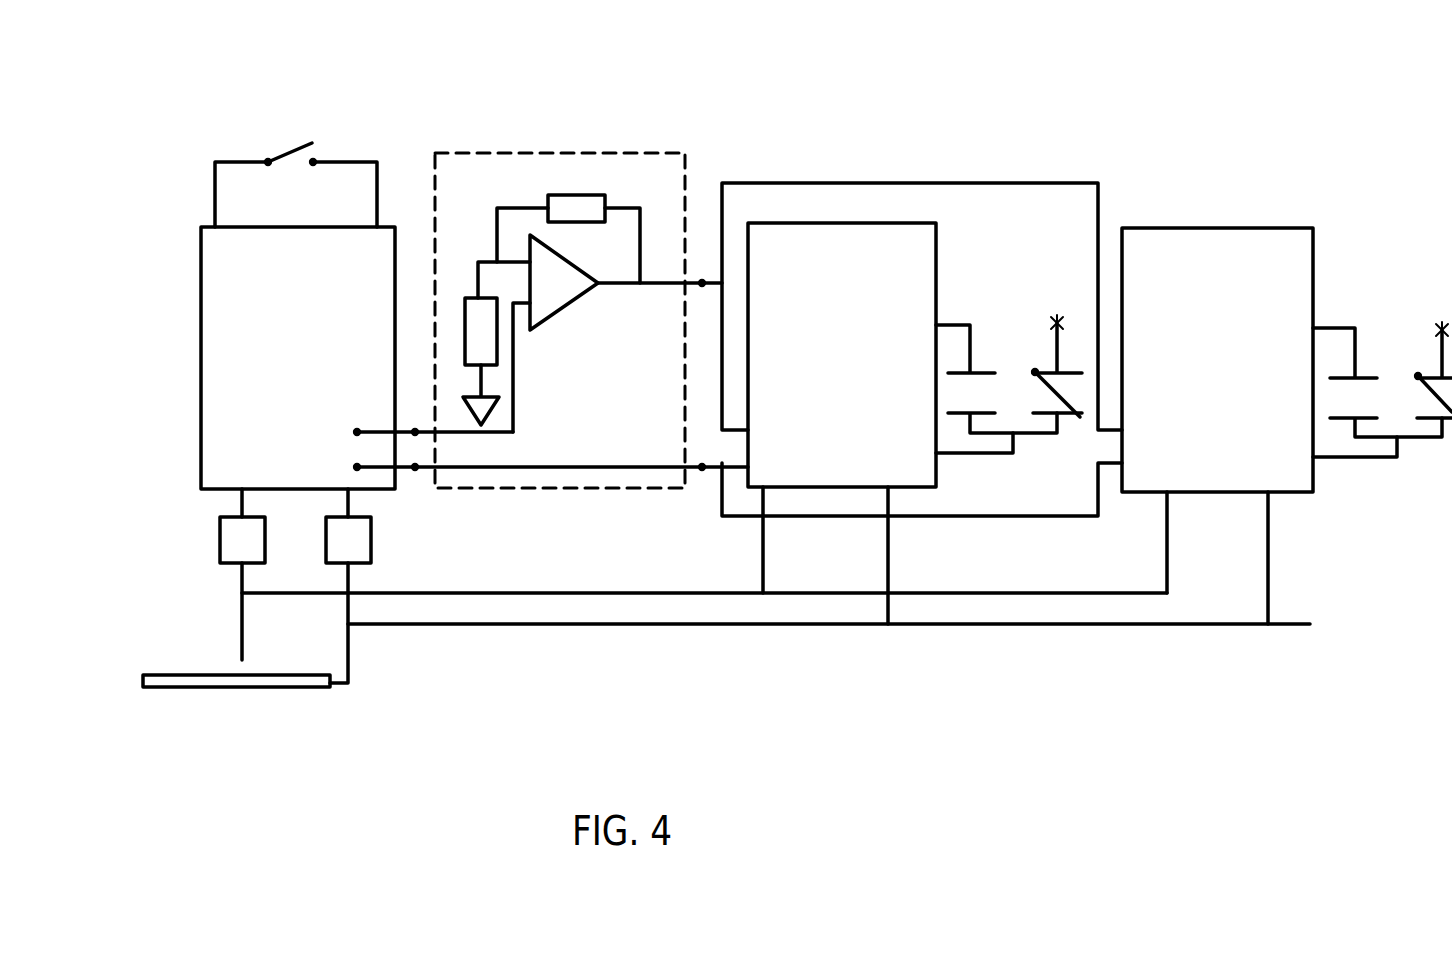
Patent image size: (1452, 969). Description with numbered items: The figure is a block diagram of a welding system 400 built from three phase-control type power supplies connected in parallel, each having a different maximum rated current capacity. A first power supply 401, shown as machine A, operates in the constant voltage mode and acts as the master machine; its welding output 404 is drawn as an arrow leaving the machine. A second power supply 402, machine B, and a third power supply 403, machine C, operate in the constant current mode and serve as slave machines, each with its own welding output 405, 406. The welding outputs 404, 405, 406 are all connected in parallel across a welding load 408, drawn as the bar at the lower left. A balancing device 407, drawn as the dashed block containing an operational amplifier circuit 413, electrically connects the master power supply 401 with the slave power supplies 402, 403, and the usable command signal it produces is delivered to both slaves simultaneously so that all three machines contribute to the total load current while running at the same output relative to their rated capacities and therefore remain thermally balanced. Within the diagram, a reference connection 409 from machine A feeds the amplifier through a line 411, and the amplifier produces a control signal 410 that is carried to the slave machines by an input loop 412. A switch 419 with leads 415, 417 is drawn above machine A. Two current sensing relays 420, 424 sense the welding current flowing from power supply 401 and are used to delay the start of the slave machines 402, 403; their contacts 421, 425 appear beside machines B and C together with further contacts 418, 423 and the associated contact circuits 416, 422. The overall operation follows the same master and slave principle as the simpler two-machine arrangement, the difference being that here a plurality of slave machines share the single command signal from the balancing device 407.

The welding system 400 is at (1242, 657).
The first power supply 401 is at (201, 379).
The second power supply 402 is at (940, 466).
The third power supply 403 is at (1315, 480).
The welding output 404 is at (295, 520).
The welding output 405 is at (839, 497).
The welding output 406 is at (1208, 520).
The balancing device 407 is at (690, 152).
The welding load 408 is at (215, 687).
The reference voltage VR terminals 409 is at (330, 452).
The control voltage VC 410 is at (615, 395).
The negative reference line 411 is at (405, 468).
The machine B input loop 412 is at (705, 382).
The operational amplifier circuit 413 is at (445, 135).
The switch lead 415 is at (378, 188).
The relay contact circuit of machine B 416 is at (967, 458).
The switch lead 417 is at (215, 195).
The relay contact 418 is at (960, 325).
The switch 419 is at (290, 110).
The current sensing relay 420 is at (355, 565).
The relay contact CR1 421 is at (1016, 350).
The relay contact circuit of machine C 422 is at (1357, 462).
The relay contact 423 is at (1345, 328).
The current sensing relay 424 is at (228, 565).
The relay contact CR2 425 is at (1400, 350).